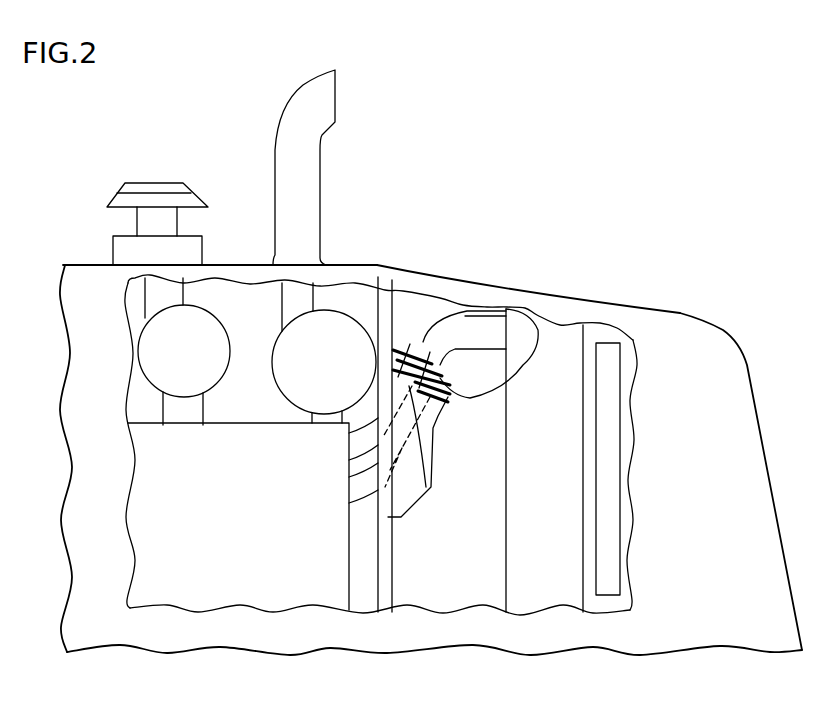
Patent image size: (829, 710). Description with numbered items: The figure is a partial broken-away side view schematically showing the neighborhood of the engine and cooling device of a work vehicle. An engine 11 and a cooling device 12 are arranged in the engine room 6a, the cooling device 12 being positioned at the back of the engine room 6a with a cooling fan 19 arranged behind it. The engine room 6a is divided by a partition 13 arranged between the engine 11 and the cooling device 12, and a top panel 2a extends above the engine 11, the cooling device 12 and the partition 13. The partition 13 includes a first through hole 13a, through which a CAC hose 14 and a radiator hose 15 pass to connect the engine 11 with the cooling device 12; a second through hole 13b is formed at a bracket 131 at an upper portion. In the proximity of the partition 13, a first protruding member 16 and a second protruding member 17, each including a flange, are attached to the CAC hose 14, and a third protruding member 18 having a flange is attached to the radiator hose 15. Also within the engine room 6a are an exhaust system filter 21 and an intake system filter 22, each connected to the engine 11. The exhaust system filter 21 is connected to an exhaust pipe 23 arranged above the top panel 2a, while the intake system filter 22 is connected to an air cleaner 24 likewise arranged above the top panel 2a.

The top panel 2a is at (500, 305).
The engine room 6a is at (353, 298).
The engine 11 is at (225, 543).
The cooling device 12 is at (558, 345).
The partition 13 is at (386, 305).
The first through hole 13a is at (380, 373).
The second through hole 13b is at (430, 430).
The bracket 131 is at (435, 410).
The CAC hose 14 is at (431, 487).
The radiator hose 15 is at (403, 412).
The first protruding member 16 is at (452, 375).
The second protruding member 17 is at (538, 322).
The third protruding member 18 is at (470, 378).
The cooling fan 19 is at (609, 355).
The exhaust system filter 21 is at (327, 325).
The intake system filter 22 is at (193, 333).
The exhaust pipe 23 is at (303, 185).
The air cleaner 24 is at (155, 186).